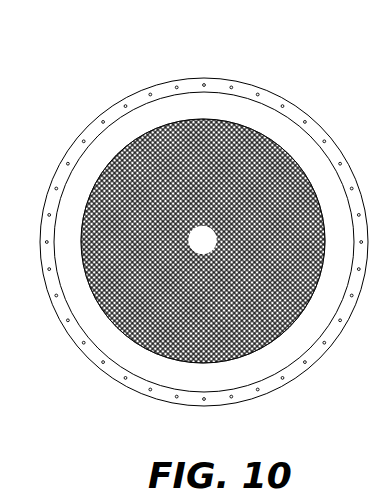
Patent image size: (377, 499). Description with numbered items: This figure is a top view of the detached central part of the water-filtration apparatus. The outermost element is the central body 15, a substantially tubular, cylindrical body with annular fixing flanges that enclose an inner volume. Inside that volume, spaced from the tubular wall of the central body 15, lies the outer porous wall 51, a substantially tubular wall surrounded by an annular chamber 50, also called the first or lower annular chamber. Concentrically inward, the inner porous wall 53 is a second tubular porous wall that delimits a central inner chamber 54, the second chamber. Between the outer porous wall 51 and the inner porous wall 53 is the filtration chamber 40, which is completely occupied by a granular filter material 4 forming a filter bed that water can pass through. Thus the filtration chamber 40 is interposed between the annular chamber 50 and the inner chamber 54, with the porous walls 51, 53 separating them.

The central body 15 is at (95, 127).
The annular chamber 50 is at (213, 103).
The filtration chamber 40 is at (269, 172).
The granular filter material 4 is at (153, 307).
The outer porous wall 51 is at (88, 195).
The inner chamber 54 is at (197, 237).
The inner porous wall 53 is at (213, 250).